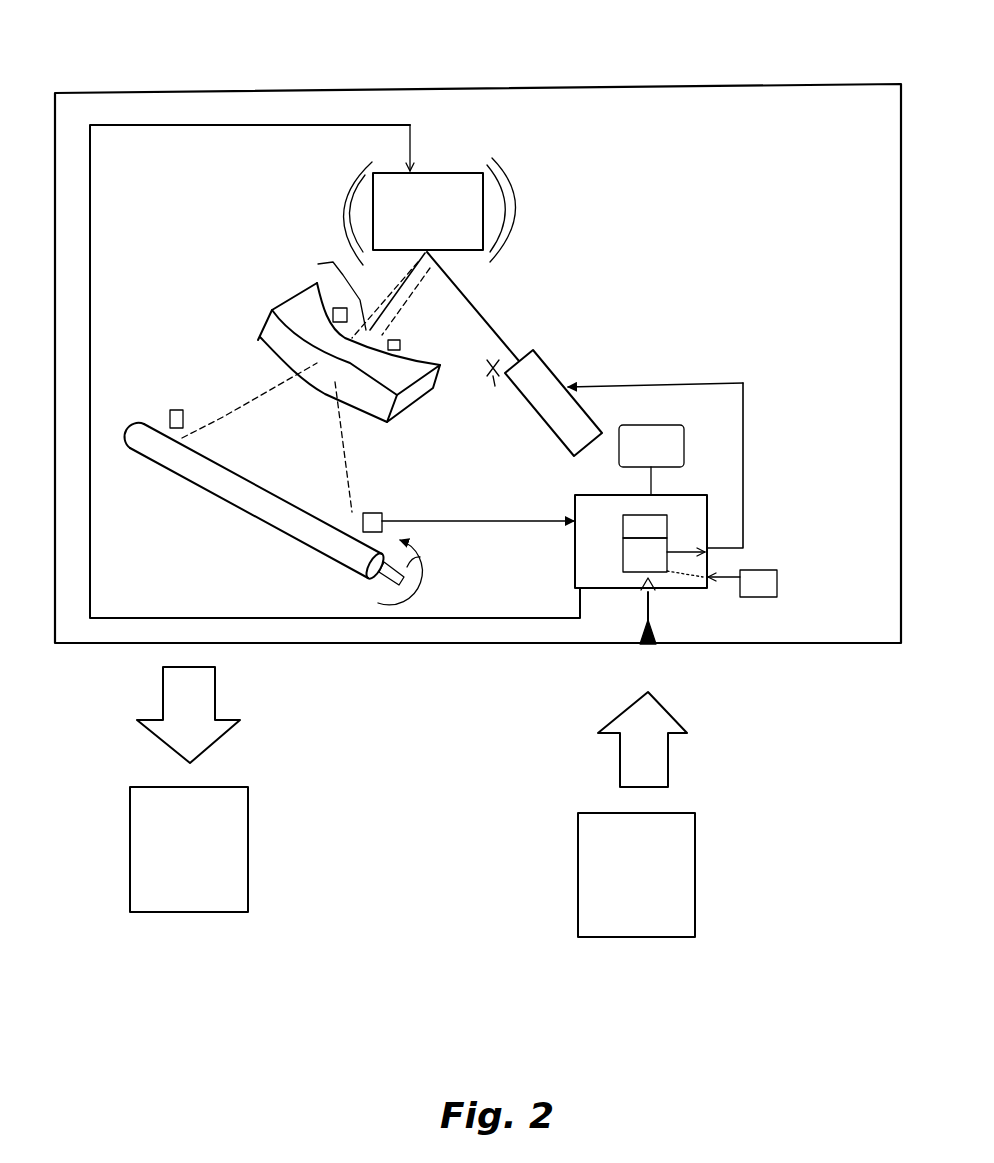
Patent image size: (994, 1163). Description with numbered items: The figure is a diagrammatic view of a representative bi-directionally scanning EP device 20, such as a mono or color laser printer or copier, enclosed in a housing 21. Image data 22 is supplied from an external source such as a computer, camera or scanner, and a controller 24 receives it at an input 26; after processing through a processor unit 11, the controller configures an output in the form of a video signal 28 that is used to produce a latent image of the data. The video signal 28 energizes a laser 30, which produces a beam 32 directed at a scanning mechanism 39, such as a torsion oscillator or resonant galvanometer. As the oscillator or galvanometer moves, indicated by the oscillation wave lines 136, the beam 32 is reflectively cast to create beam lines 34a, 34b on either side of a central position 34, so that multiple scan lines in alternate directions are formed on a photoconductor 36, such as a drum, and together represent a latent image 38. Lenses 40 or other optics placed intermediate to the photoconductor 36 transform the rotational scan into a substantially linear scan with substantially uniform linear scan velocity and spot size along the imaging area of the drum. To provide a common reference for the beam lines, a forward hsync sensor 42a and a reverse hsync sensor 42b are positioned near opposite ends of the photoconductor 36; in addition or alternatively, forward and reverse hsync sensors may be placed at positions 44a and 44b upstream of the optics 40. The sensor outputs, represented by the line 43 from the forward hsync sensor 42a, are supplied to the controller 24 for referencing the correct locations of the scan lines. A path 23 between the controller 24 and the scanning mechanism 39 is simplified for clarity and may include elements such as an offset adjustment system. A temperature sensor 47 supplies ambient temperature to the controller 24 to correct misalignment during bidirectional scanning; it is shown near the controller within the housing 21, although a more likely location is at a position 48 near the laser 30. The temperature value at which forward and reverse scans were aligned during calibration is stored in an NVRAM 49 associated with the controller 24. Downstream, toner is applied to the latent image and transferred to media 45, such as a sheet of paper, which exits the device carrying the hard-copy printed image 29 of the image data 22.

The EP device 20 is at (627, 60).
The housing 21 is at (720, 87).
The image data 22 is at (675, 883).
The path 23 is at (477, 612).
The controller 24 is at (572, 506).
The input 26 is at (645, 593).
The video signal 28 is at (743, 453).
The printed image 29 is at (148, 863).
The laser 30 is at (540, 377).
The beam 32 is at (470, 295).
The central position 34 is at (401, 346).
The beam line 34a is at (380, 330).
The beam line 34b is at (223, 415).
The photoconductor 36 is at (220, 503).
The latent image 38 is at (330, 557).
The scanning mechanism 39 is at (437, 172).
The lenses 40 is at (313, 330).
The forward hsync sensor 42a is at (385, 513).
The reverse hsync sensor 42b is at (167, 417).
The line 43 is at (480, 521).
The forward hsync sensor position 44a is at (440, 367).
The reverse hsync sensor position 44b is at (337, 308).
The media 45 is at (193, 787).
The temperature sensor 47 is at (778, 583).
The position 48 is at (504, 391).
The NVRAM 49 is at (683, 429).
The processor unit 11 is at (623, 527).
The oscillation wave lines 136 is at (348, 180).